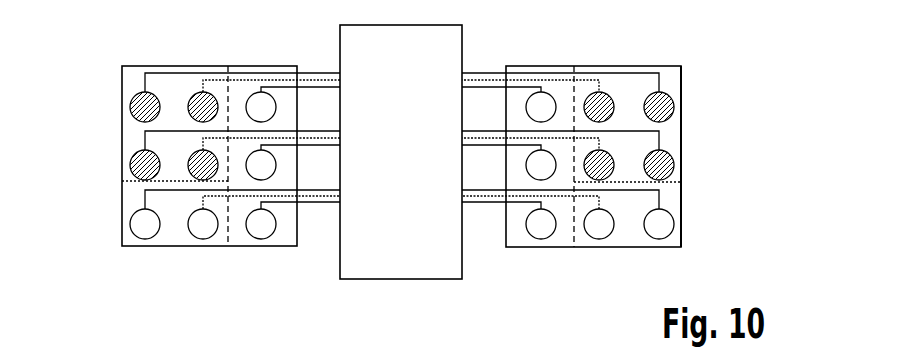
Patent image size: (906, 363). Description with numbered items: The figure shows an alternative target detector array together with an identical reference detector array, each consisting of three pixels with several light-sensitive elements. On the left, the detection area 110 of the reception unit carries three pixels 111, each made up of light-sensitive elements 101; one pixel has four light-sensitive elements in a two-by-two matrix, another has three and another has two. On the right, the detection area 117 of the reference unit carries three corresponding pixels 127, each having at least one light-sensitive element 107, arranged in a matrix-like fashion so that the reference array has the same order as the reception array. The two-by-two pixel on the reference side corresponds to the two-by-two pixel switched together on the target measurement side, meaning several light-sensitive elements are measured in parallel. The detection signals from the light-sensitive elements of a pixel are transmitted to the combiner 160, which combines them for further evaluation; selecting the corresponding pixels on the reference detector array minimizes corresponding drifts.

The detection area 110 is at (112, 96).
The pixel 111 is at (126, 143).
The light-sensitive element 101 is at (126, 229).
The combiner 160 is at (330, 270).
The detection area 117 is at (691, 89).
The pixel 127 is at (678, 139).
The light-sensitive element 107 is at (680, 172).